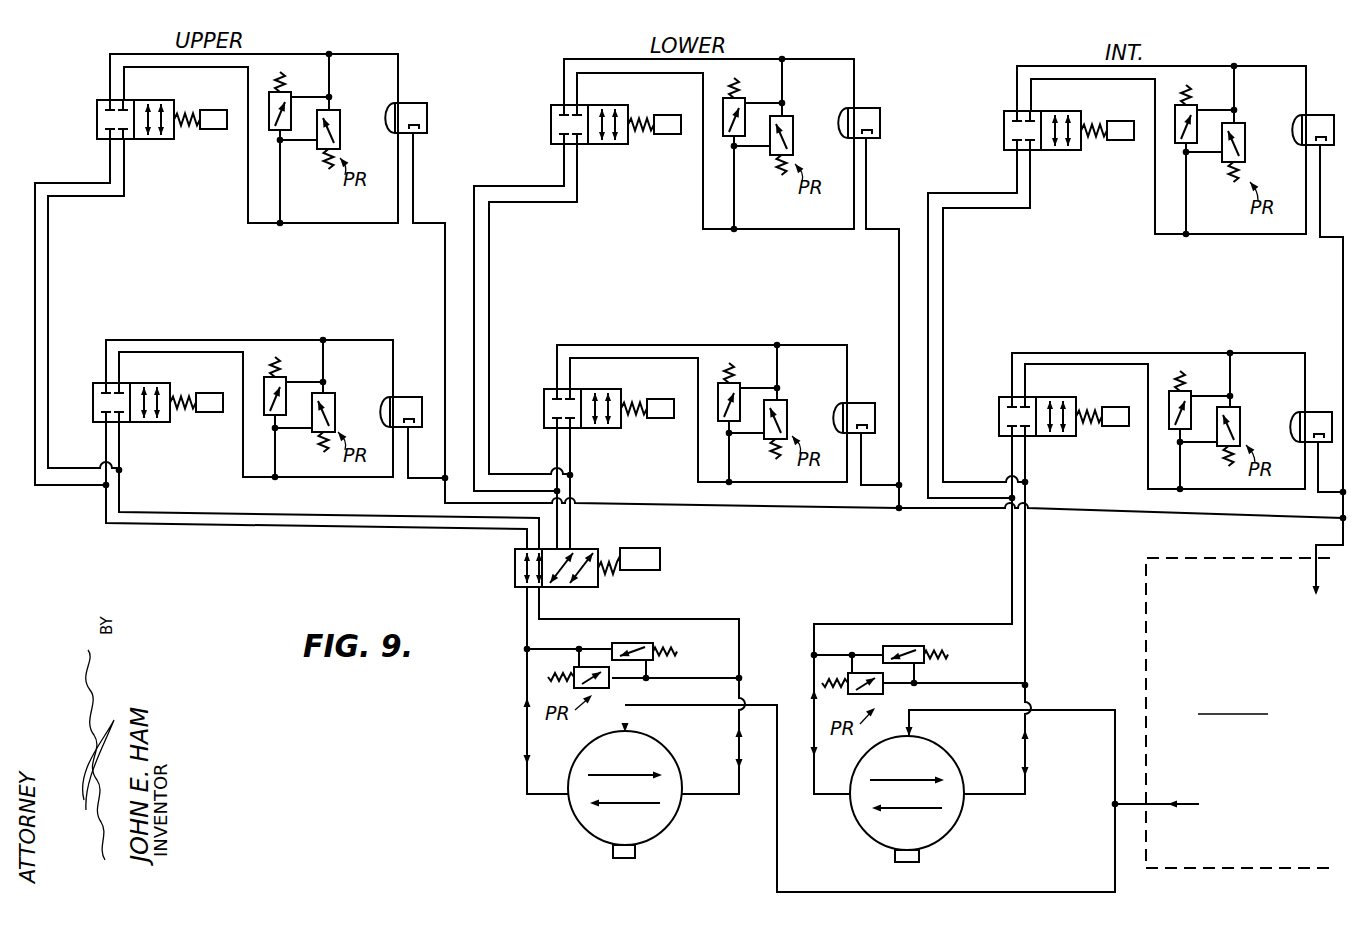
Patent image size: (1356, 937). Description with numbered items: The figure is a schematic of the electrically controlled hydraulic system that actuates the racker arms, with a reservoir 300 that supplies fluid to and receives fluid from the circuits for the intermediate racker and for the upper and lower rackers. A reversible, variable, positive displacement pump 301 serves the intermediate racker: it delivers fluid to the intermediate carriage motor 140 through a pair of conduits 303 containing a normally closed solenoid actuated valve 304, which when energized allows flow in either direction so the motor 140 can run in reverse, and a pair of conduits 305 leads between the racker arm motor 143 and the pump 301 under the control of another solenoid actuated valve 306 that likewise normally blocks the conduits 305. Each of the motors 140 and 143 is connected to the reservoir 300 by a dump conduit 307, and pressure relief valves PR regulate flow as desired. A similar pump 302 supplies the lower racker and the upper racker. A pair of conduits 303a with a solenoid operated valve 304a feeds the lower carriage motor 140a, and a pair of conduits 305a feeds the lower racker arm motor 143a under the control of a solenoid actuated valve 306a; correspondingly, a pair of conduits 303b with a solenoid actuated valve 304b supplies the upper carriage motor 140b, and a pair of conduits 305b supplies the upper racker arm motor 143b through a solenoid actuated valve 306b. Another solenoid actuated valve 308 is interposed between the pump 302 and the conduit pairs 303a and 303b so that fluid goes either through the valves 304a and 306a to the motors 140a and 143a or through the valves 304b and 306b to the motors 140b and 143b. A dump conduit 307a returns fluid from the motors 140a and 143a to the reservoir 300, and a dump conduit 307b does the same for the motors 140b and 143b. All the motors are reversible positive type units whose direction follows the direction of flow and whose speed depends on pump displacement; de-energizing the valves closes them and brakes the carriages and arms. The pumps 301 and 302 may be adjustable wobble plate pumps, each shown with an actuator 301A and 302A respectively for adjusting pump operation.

The carriage motor 140b is at (419, 104).
The solenoid actuated valve 304b is at (143, 140).
The dump conduit 307b is at (423, 222).
The pair of conduits 303b is at (36, 236).
The pair of conduits 305b is at (163, 352).
The racker arm motor 143b is at (392, 397).
The solenoid actuated valve 306b is at (152, 423).
The carriage motor 140a is at (866, 108).
The solenoid operated valve 304a is at (607, 145).
The pair of conduits 303a is at (475, 236).
The dump conduit 307a is at (888, 232).
The solenoid actuated valve 306a is at (605, 389).
The racker arm motor 143a is at (838, 403).
The pair of conduits 305a is at (557, 450).
The carriage motor 140 is at (1300, 115).
The solenoid actuated valve 304 is at (1063, 150).
The pair of conduits 303 is at (973, 193).
The dump conduit 307 is at (1331, 238).
The solenoid actuated valve 306 is at (1063, 397).
The racker arm motor 143 is at (1294, 412).
The pair of conduits 305 is at (1012, 459).
The solenoid actuated valve 308 is at (515, 571).
The pump 302 is at (676, 726).
The actuator 302A is at (612, 850).
The pump 301 is at (935, 741).
The actuator 301A is at (919, 856).
The reservoir 300 is at (1140, 642).